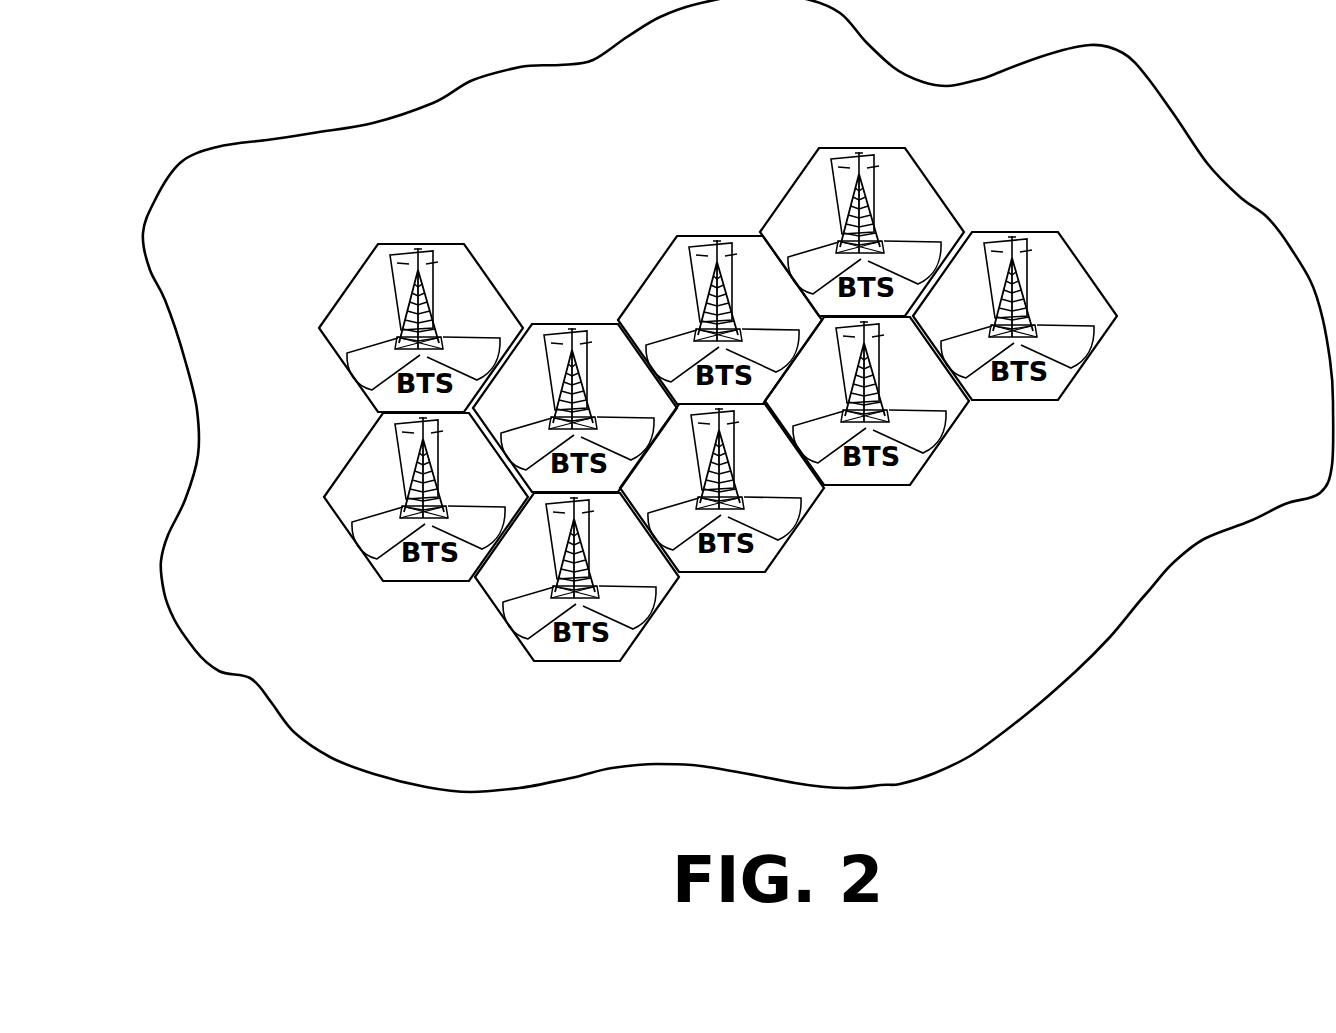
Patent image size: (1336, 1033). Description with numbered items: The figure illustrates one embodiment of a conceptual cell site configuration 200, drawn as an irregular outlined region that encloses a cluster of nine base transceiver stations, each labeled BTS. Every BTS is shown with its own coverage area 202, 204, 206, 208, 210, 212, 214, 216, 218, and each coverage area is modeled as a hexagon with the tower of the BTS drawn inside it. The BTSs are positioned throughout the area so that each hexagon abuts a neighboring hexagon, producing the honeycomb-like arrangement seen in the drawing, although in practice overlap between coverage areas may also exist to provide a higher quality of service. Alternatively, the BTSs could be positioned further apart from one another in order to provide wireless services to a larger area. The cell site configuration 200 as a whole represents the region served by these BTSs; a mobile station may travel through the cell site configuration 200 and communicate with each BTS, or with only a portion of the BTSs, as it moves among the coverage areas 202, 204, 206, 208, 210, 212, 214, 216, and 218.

The cell site configuration 200 is at (364, 183).
The coverage area 202 is at (503, 321).
The coverage area 204 is at (654, 401).
The coverage area 206 is at (800, 313).
The coverage area 208 is at (944, 226).
The coverage area 210 is at (506, 490).
The coverage area 212 is at (660, 570).
The coverage area 214 is at (804, 482).
The coverage area 216 is at (946, 393).
The coverage area 218 is at (1094, 309).